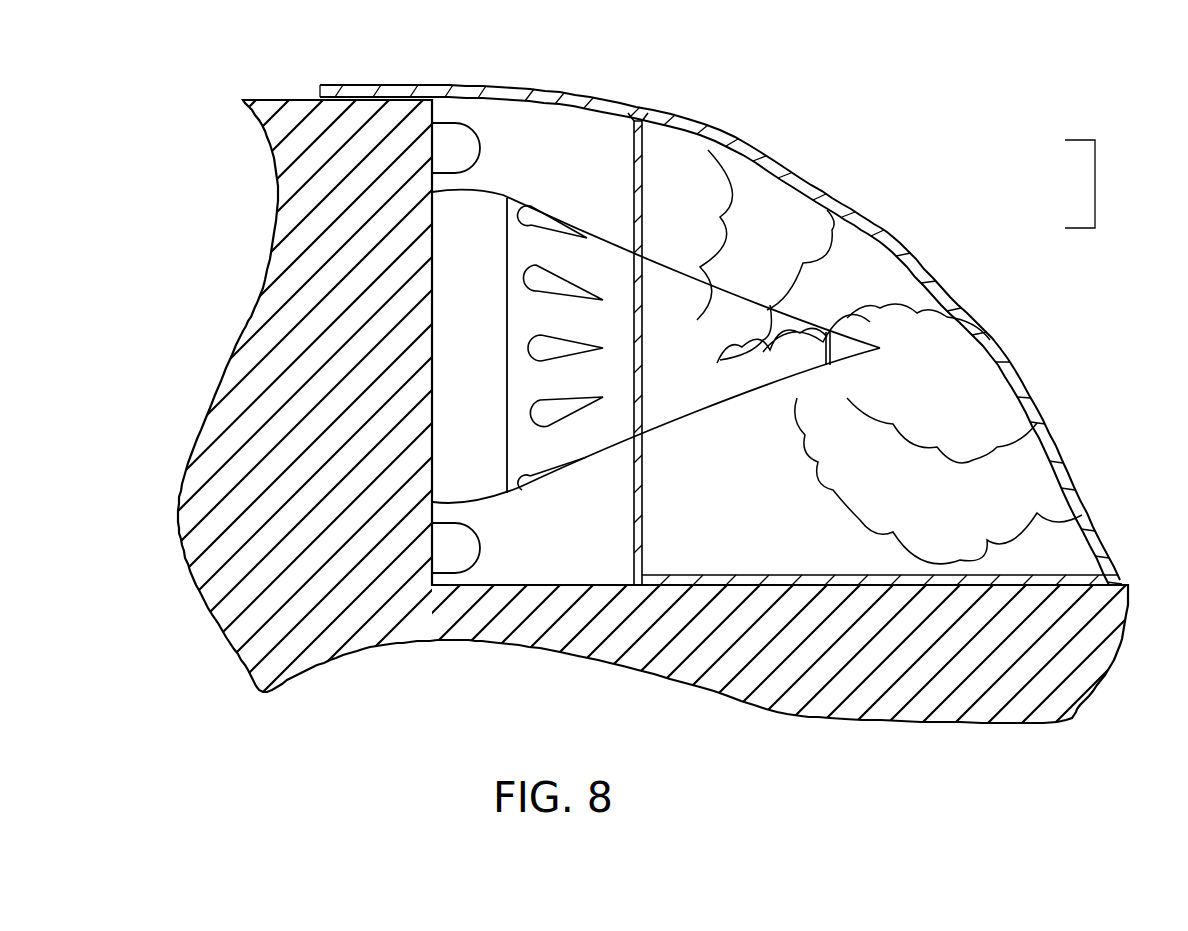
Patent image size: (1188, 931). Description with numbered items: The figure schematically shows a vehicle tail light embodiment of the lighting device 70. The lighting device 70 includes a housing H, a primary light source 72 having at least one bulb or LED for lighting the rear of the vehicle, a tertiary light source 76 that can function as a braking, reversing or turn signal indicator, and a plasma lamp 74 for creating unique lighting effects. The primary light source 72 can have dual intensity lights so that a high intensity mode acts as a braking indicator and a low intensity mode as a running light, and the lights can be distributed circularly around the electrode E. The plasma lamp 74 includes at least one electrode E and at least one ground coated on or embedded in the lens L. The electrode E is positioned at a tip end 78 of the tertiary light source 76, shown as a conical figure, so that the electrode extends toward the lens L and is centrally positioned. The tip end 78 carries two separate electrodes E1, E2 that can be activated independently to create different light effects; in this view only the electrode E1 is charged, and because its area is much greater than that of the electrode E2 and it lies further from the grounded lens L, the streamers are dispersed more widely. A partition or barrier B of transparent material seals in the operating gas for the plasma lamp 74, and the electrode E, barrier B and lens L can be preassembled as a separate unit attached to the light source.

The lighting device 70 is at (823, 128).
The primary light source 72 is at (490, 148).
The plasma lamp 74 is at (831, 429).
The tertiary light source 76 is at (550, 432).
The tip end 78 is at (864, 357).
The barrier B is at (645, 472).
The electrode E is at (1097, 184).
The electrode E1 is at (743, 320).
The electrode E2 is at (849, 347).
The lens L is at (1005, 345).
The housing H is at (745, 640).